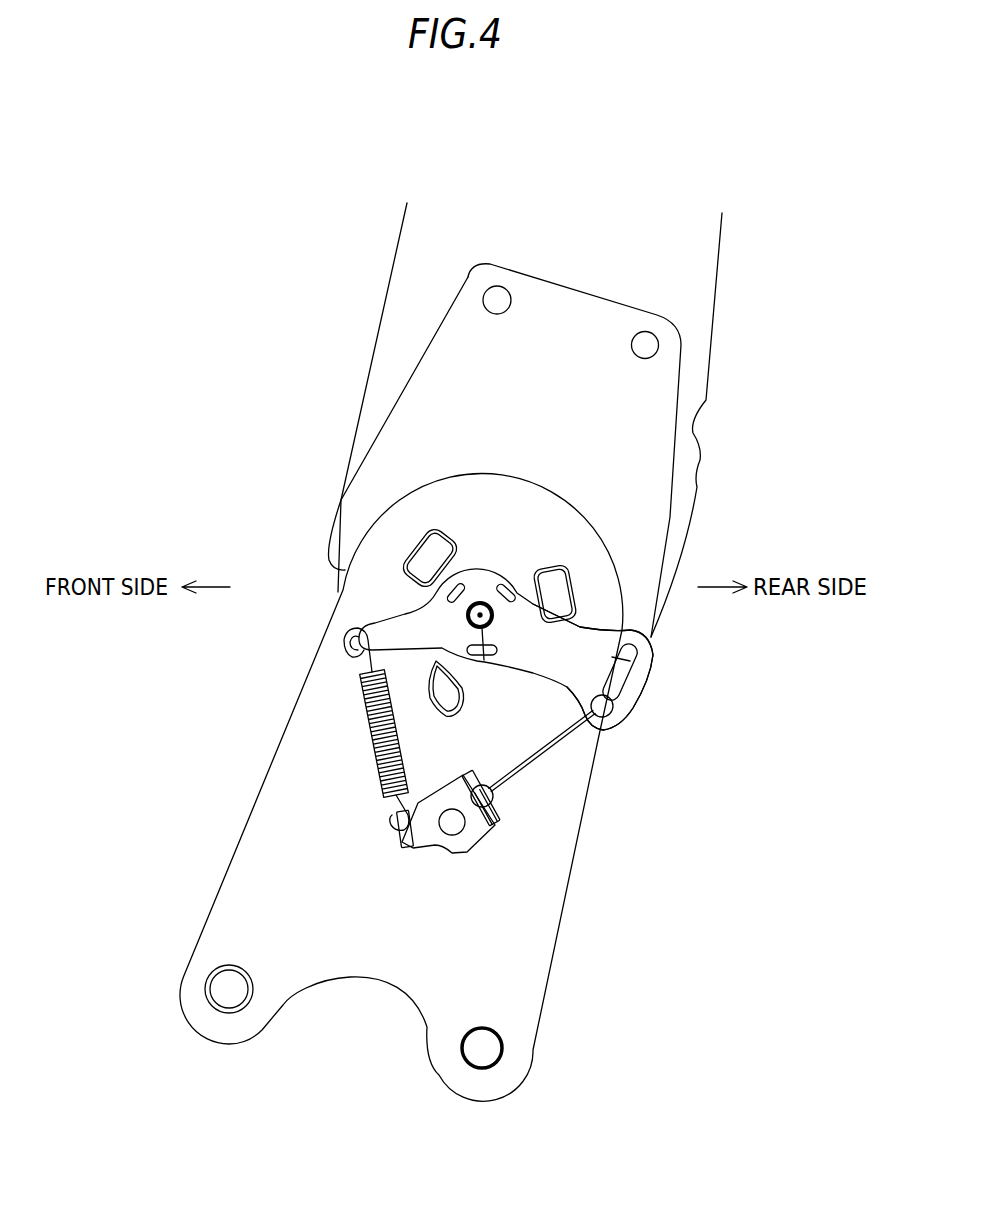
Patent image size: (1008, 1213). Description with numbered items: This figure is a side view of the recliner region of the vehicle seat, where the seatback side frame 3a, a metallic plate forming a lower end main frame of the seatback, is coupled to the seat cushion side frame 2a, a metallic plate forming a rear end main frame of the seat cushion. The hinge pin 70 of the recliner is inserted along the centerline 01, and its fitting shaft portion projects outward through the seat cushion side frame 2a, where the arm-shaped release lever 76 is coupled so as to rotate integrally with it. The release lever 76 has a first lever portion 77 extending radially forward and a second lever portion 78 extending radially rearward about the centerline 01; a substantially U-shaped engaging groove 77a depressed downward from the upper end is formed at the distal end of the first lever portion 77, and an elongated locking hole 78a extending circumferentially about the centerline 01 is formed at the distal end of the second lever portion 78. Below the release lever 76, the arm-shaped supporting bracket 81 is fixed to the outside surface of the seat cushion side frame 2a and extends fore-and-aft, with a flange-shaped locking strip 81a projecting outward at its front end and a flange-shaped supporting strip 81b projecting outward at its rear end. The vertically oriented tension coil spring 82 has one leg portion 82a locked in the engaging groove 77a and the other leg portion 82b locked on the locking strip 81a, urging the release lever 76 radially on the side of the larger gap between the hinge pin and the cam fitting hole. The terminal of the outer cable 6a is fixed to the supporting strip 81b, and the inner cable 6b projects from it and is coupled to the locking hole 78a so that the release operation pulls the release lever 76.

The seat cushion side frame 2a is at (562, 895).
The seatback side frame 3a is at (668, 507).
The hinge pin 70 is at (481, 602).
The release lever 76 is at (555, 620).
The first lever portion 77 is at (390, 622).
The engaging groove 77a is at (345, 620).
The second lever portion 78 is at (590, 637).
The locking hole 78a is at (634, 680).
The outer cable 6a is at (480, 838).
The inner cable 6b is at (553, 752).
The supporting bracket 81 is at (453, 851).
The locking strip 81a is at (398, 848).
The supporting strip 81b is at (501, 822).
The tension coil spring 82 is at (378, 767).
The one leg portion 82a is at (347, 657).
The other leg portion 82b is at (397, 830).
The centerline 01 is at (484, 660).